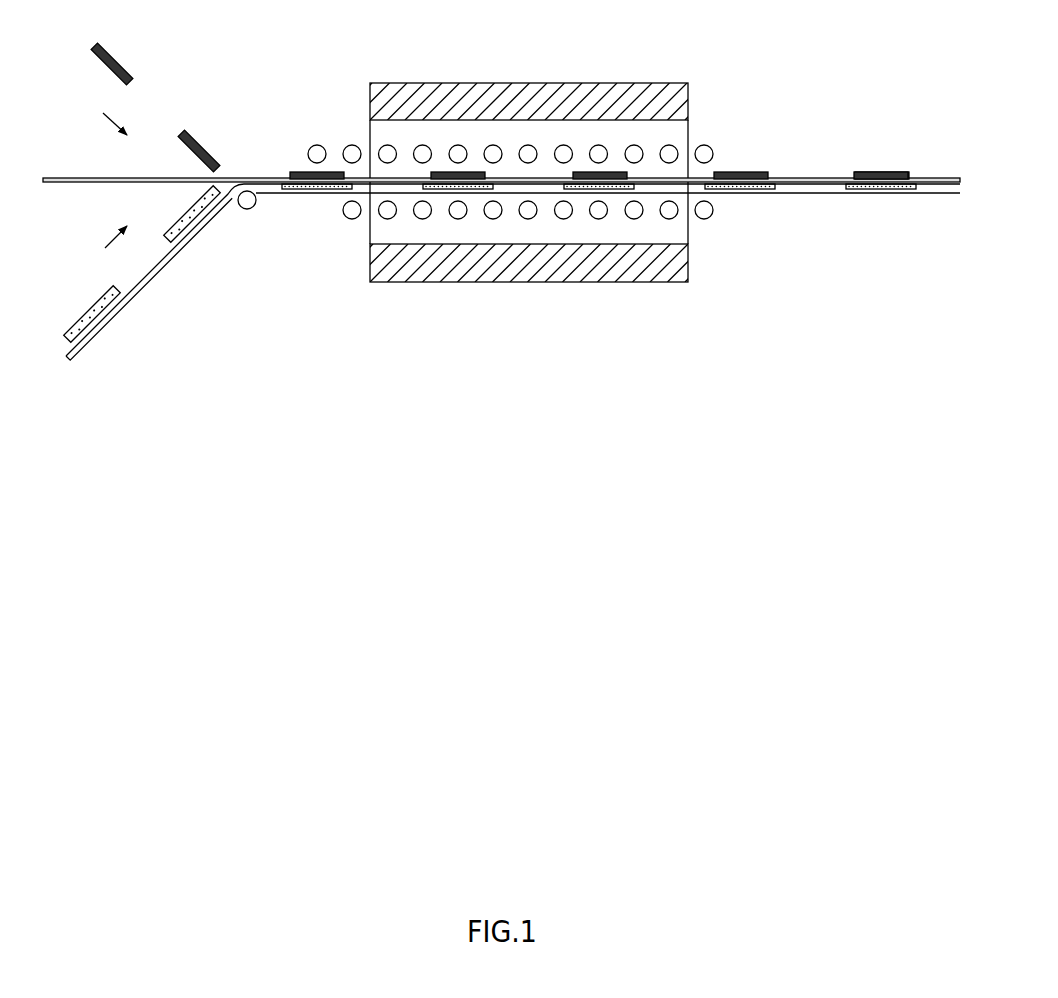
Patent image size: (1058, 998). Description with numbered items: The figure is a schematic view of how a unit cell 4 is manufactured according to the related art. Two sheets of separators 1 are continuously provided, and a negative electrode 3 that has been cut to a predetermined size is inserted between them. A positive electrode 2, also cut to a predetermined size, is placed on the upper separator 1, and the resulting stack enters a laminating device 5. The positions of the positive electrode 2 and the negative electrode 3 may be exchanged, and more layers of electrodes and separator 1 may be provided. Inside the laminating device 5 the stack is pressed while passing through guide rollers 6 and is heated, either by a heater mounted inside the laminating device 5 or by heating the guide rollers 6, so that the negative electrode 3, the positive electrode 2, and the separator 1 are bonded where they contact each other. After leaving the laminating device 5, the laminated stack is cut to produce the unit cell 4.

The separator 1 is at (80, 178).
The positive electrode 2 is at (114, 60).
The negative electrode 3 is at (90, 310).
The unit cell 4 is at (886, 160).
The laminating device 5 is at (543, 68).
The guide rollers 6 is at (706, 217).